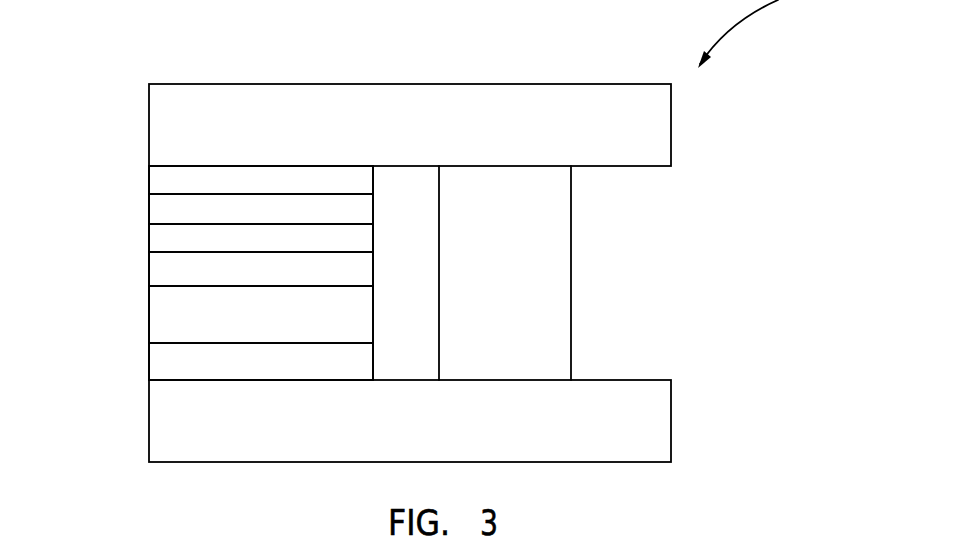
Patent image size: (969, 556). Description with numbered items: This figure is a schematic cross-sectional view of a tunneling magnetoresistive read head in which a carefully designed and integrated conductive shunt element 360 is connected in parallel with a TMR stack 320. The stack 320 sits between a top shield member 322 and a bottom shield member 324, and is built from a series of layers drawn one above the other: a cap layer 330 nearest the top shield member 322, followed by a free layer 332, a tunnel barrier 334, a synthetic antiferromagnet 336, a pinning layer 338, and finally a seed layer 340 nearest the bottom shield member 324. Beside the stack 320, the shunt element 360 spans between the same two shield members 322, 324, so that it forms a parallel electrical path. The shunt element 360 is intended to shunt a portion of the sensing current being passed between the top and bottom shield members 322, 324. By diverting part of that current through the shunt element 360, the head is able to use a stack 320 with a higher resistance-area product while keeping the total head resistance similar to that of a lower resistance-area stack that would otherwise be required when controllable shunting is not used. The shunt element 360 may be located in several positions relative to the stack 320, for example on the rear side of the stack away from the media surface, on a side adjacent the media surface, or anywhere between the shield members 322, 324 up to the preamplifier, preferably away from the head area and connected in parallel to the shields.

The TMR stack 320 is at (287, 268).
The top shield member 322 is at (162, 103).
The bottom shield member 324 is at (172, 443).
The cap layer 330 is at (160, 177).
The free layer 332 is at (160, 212).
The tunnel barrier 334 is at (160, 245).
The synthetic antiferromagnet 336 is at (160, 276).
The pinning layer 338 is at (160, 321).
The seed layer 340 is at (160, 362).
The conductive shunt element 360 is at (540, 326).